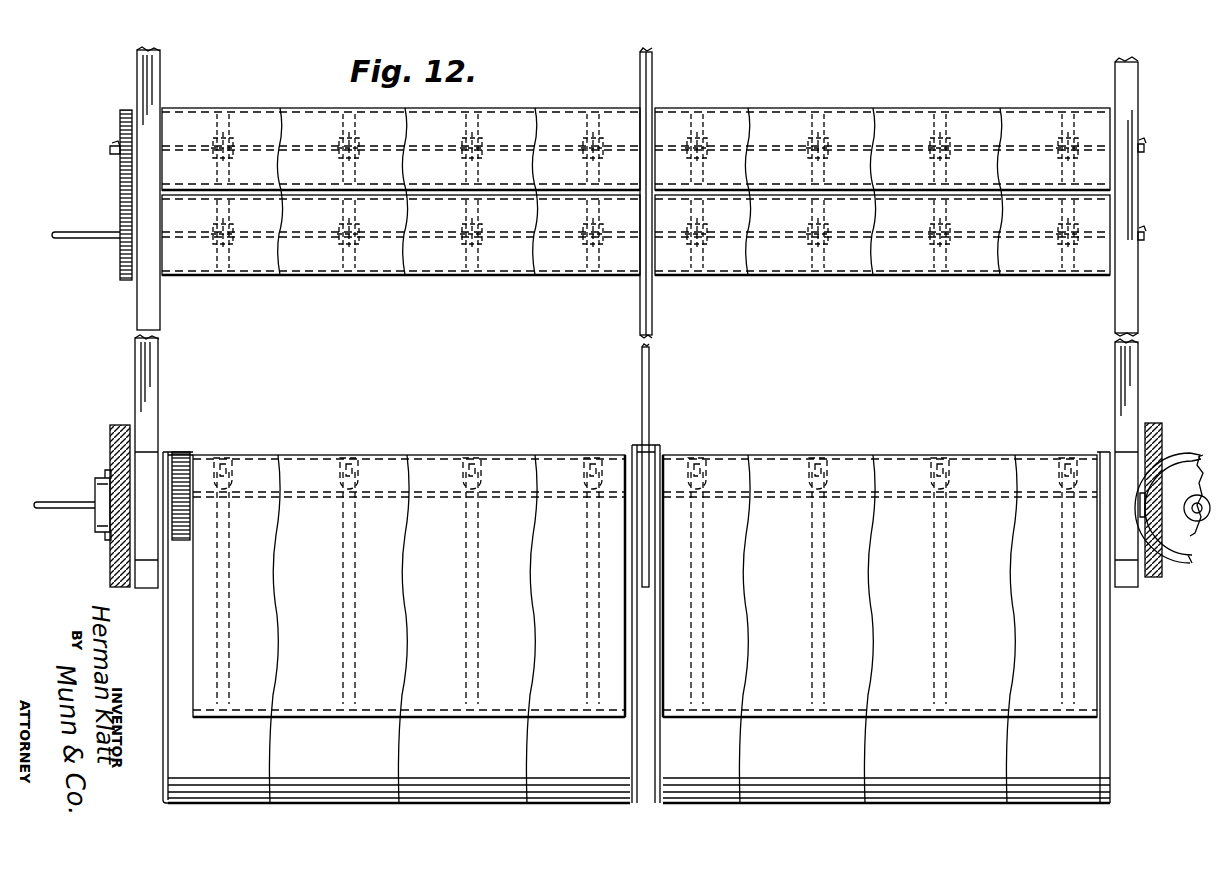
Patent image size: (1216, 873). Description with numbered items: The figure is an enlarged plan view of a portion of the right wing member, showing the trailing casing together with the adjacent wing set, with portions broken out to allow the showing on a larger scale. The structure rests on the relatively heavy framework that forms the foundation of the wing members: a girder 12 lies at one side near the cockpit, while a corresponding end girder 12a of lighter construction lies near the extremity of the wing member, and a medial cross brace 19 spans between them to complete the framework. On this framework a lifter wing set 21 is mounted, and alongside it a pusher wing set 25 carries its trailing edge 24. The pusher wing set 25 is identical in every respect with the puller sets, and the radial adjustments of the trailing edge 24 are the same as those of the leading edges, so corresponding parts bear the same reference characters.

The girder 12 is at (137, 316).
The end girder 12a is at (1122, 306).
The medial cross brace 19 is at (640, 321).
The lifter wing set 21 is at (560, 103).
The pusher wing set 25 is at (251, 473).
The trailing edge 24 is at (330, 782).